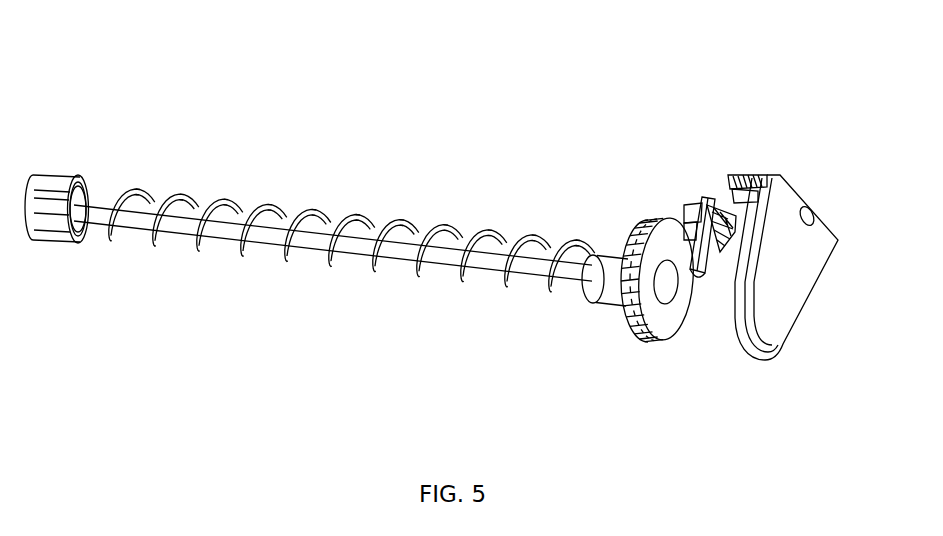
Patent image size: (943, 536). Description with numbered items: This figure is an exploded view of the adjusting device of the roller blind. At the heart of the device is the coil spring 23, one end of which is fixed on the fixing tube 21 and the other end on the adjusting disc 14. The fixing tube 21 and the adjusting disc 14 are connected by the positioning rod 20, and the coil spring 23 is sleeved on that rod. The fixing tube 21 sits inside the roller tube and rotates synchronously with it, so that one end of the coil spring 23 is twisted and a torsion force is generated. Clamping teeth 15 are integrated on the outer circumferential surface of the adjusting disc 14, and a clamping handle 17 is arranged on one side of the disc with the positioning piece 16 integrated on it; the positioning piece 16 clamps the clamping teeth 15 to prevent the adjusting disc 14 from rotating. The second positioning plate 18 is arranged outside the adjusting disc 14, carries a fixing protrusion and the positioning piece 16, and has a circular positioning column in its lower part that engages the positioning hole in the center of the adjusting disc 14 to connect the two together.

The adjusting disc 14 is at (658, 322).
The clamping teeth 15 is at (645, 223).
The positioning piece 16 is at (697, 200).
The clamping handle 17 is at (717, 260).
The second positioning plate 18 is at (800, 288).
The positioning rod 20 is at (415, 248).
The fixing tube 21 is at (66, 173).
The coil spring 23 is at (222, 203).